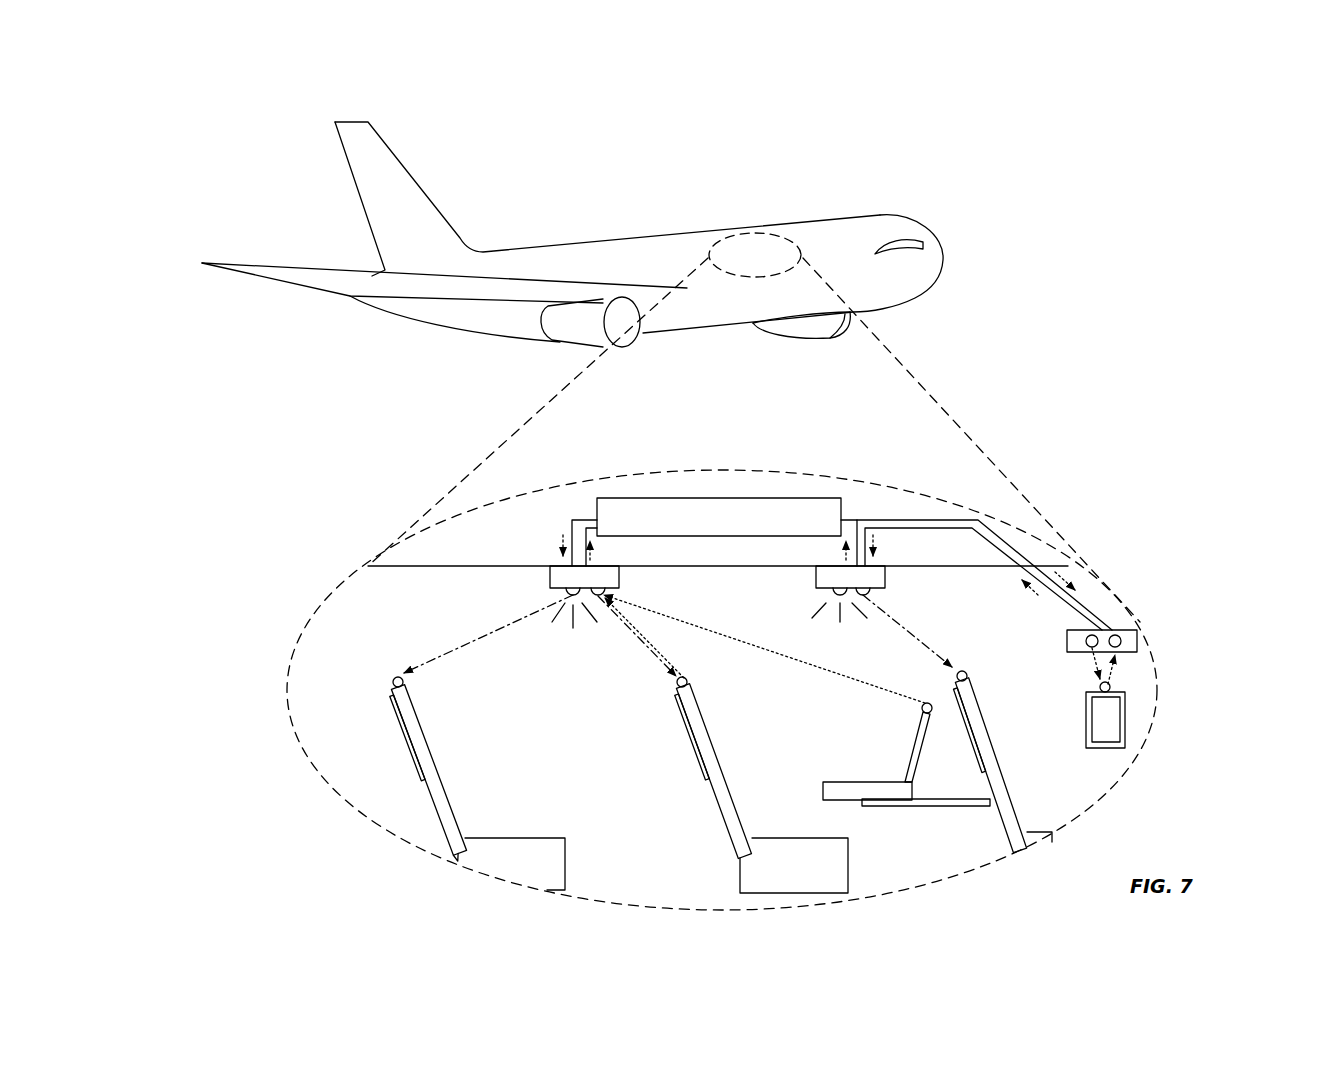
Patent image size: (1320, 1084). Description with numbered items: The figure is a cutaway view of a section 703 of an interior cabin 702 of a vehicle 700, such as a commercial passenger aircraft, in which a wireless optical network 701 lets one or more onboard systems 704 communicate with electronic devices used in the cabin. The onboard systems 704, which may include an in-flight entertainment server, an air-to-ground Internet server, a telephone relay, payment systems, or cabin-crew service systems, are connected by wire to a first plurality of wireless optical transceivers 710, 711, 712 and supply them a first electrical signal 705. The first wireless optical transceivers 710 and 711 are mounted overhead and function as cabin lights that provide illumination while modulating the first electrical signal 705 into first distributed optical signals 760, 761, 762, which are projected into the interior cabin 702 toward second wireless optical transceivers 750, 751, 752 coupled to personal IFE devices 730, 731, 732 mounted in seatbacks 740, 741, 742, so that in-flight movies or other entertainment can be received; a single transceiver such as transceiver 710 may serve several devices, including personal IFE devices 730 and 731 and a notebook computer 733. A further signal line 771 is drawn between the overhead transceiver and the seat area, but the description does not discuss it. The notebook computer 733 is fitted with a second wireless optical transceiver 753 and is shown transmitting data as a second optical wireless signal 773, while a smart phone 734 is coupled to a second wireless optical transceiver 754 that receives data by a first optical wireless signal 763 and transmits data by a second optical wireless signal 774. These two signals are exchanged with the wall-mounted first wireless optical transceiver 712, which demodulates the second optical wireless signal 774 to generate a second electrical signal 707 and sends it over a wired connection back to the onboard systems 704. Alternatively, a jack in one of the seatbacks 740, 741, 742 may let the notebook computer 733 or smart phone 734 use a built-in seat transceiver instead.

The vehicle 700 is at (360, 198).
The wireless optical network 701 is at (284, 552).
The interior cabin 702 is at (750, 244).
The section of interior cabin 703 is at (297, 655).
The onboard systems 704 is at (795, 497).
The first electrical signal 705 is at (560, 544).
The second electrical signal 707 is at (1038, 592).
The first wireless optical transceiver 710 is at (550, 577).
The first wireless optical transceiver 711 is at (816, 577).
The first wireless optical transceiver 712 is at (1068, 632).
The personal IFE device 730 is at (417, 747).
The personal IFE device 731 is at (697, 753).
The personal IFE device 732 is at (977, 755).
The notebook computer 733 is at (833, 782).
The smart phone 734 is at (1107, 748).
The seatback 740 is at (428, 780).
The seatback 741 is at (710, 780).
The seatback 742 is at (1000, 810).
The second wireless optical transceiver 750 is at (392, 680).
The second wireless optical transceiver 751 is at (676, 680).
The second wireless optical transceiver 752 is at (958, 672).
The second wireless optical transceiver 753 is at (921, 710).
The second wireless optical transceiver 754 is at (1099, 687).
The first distributed optical signal 760 is at (480, 637).
The first distributed optical signal 761 is at (620, 627).
The first distributed optical signal 762 is at (897, 627).
The first optical wireless signal 763 is at (1097, 668).
The first response signal 771 is at (657, 652).
The second optical wireless signal 773 is at (702, 630).
The second optical wireless signal 774 is at (1113, 672).